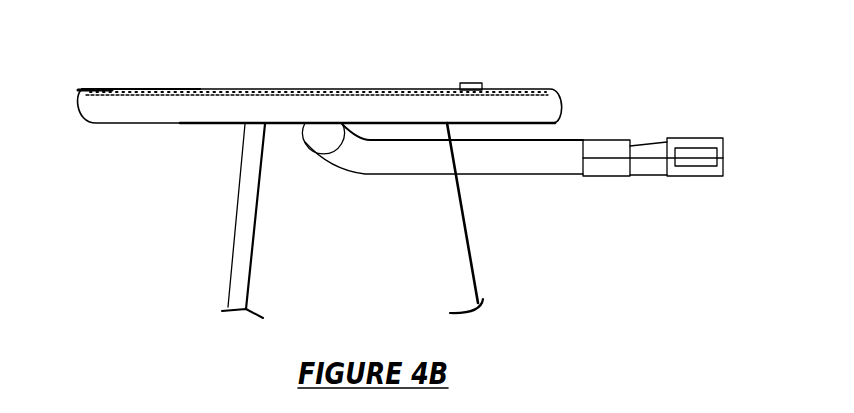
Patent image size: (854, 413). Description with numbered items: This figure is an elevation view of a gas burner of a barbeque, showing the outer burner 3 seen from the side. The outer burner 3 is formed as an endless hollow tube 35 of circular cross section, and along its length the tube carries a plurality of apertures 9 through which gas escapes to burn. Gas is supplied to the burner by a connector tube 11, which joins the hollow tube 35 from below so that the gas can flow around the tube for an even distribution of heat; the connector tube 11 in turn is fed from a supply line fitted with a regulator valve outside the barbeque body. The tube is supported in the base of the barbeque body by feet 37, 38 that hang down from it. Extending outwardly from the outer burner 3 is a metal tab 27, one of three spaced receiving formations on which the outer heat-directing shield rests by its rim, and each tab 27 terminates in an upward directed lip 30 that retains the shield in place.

The outer burner 3 is at (538, 85).
The apertures 9 is at (313, 88).
The connector tube 11 is at (558, 150).
The metal tab 27 is at (100, 88).
The lip 30 is at (82, 89).
The hollow tube 35 is at (166, 108).
The foot 37 is at (468, 232).
The foot 38 is at (240, 223).